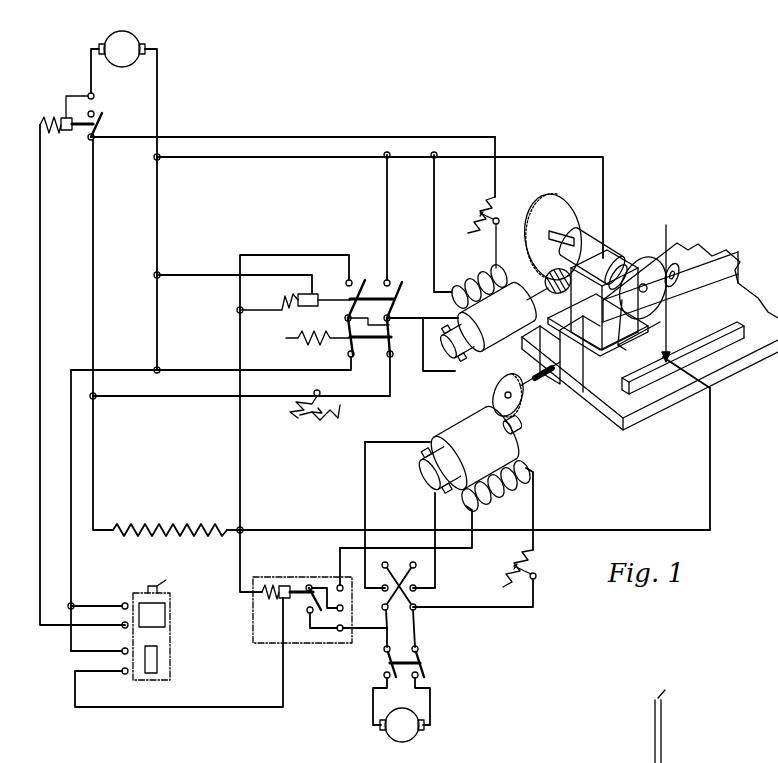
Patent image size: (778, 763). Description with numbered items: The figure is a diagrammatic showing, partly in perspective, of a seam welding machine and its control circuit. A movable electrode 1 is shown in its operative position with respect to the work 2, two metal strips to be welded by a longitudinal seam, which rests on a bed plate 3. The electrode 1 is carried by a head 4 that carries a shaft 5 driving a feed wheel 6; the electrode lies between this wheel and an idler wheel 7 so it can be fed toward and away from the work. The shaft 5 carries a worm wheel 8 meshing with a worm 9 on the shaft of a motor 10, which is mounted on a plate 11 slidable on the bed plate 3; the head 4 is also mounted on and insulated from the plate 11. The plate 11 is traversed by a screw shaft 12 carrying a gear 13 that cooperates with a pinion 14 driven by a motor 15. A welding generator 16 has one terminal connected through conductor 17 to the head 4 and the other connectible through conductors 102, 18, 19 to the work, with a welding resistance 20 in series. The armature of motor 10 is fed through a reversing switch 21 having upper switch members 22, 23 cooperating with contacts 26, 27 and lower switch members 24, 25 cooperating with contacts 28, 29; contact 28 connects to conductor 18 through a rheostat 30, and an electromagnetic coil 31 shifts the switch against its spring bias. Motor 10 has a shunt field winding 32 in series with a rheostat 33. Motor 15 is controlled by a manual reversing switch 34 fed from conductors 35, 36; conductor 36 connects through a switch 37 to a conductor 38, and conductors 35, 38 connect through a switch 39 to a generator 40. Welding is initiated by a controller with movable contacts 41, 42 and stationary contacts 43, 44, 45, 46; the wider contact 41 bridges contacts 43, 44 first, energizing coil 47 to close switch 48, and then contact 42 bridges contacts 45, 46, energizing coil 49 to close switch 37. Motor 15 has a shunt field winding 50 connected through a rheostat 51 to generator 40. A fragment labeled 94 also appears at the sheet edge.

The movable electrode 1 is at (670, 233).
The work 2 is at (736, 330).
The bed plate 3 is at (735, 362).
The head 4 is at (592, 248).
The shaft 5 is at (621, 266).
The feed wheel 6 is at (652, 258).
The idler wheel 7 is at (679, 272).
The worm wheel 8 is at (533, 222).
The worm 9 is at (564, 284).
The motor 10 is at (496, 292).
The plate 11 is at (740, 272).
The screw shaft 12 is at (535, 386).
The gear 13 is at (495, 388).
The pinion 14 is at (518, 430).
The motor 15 is at (458, 426).
The welding generator 16 is at (137, 46).
The conductor 17 is at (565, 157).
The conductor 18 is at (95, 284).
The conductor 19 is at (594, 530).
The welding resistance 20 is at (172, 524).
The reversing switch 21 is at (394, 308).
The switch member 22 is at (401, 290).
The switch member 23 is at (363, 280).
The switch member 24 is at (393, 356).
The switch member 25 is at (355, 358).
The stationary contact 26 is at (389, 280).
The stationary contact 27 is at (346, 281).
The stationary contact 28 is at (370, 346).
The stationary contact 29 is at (320, 345).
The rheostat 30 is at (312, 420).
The electromagnetic coil 31 is at (296, 314).
The shunt field winding 32 is at (470, 282).
The rheostat 33 is at (478, 210).
The manual reversing switch 34 is at (399, 570).
The conductor 35 is at (418, 628).
The conductor 36 is at (344, 609).
The switch 37 is at (306, 586).
The conductor 38 is at (384, 630).
The switch 39 is at (386, 661).
The generator 40 is at (404, 741).
The movable contact 41 is at (166, 612).
The movable contact 42 is at (158, 660).
The stationary contact 43 is at (122, 604).
The stationary contact 44 is at (122, 623).
The stationary contact 45 is at (122, 649).
The stationary contact 46 is at (122, 669).
The coil 47 is at (42, 124).
The switch 48 is at (104, 121).
The coil 49 is at (258, 600).
The shunt field winding 50 is at (436, 504).
The rheostat 51 is at (508, 562).
The guide 94 is at (646, 754).
The conductor 102 is at (89, 75).